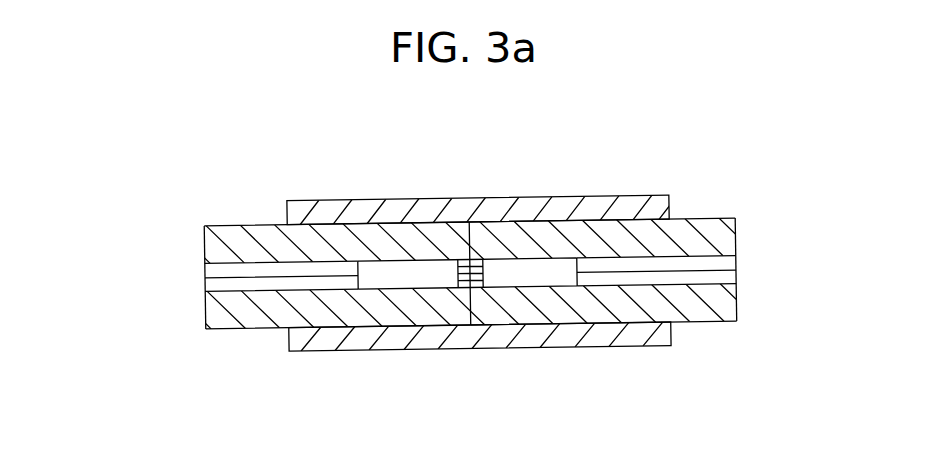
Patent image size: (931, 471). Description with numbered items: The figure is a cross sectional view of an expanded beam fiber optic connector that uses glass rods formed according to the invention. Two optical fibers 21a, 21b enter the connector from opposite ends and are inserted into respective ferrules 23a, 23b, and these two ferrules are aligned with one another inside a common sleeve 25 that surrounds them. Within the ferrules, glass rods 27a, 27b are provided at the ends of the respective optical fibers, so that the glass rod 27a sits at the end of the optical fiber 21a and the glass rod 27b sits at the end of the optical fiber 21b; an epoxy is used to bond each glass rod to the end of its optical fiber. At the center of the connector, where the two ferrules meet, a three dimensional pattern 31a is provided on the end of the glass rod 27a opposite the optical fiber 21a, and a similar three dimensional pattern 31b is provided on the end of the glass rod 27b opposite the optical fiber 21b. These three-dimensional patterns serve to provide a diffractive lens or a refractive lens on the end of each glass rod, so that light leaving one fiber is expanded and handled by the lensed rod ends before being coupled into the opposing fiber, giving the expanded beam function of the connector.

The optical fiber 21a is at (205, 272).
The optical fiber 21b is at (737, 268).
The ferrule 23a is at (218, 330).
The ferrule 23b is at (703, 322).
The sleeve 25 is at (610, 194).
The glass rod 27a is at (420, 288).
The glass rod 27b is at (517, 290).
The three dimensional pattern 31a is at (458, 262).
The three dimensional pattern 31b is at (470, 259).